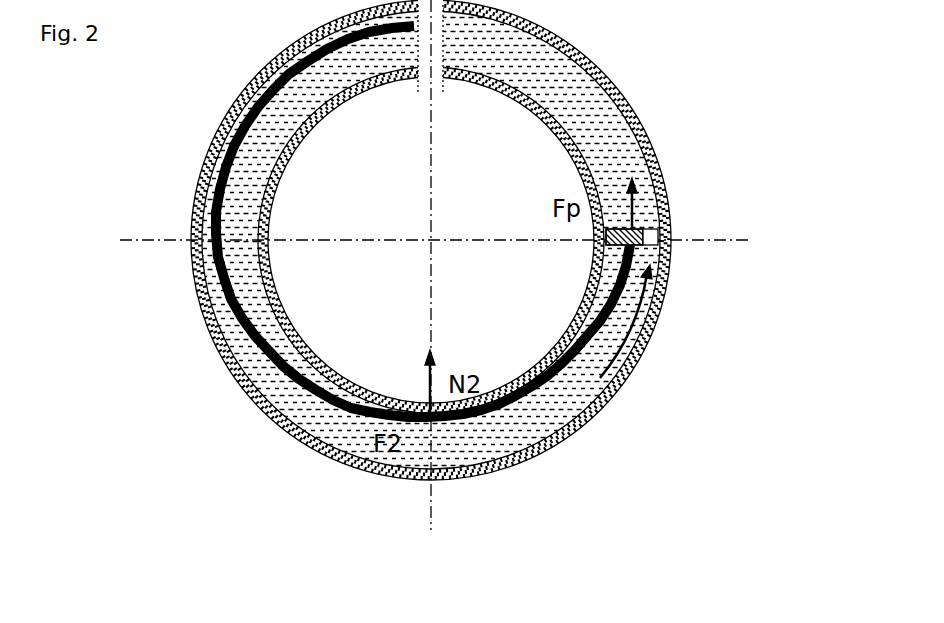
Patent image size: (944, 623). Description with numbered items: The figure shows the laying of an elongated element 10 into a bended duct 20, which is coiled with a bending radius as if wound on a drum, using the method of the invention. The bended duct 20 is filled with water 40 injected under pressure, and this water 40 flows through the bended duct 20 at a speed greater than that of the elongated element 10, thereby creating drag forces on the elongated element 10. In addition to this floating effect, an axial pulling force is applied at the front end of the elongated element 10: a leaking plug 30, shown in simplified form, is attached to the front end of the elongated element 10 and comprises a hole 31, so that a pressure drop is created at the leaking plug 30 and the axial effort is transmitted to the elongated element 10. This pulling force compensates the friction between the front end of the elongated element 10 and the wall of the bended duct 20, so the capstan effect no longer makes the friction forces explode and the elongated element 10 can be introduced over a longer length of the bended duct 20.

The elongated element 10 is at (226, 163).
The bended duct 20 is at (252, 400).
The leaking plug 30 is at (612, 252).
The hole 31 is at (648, 237).
The water 40 is at (575, 112).